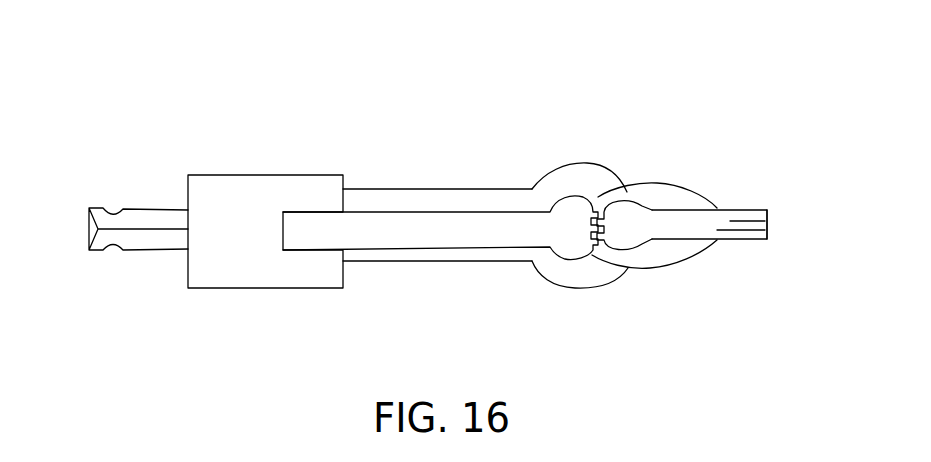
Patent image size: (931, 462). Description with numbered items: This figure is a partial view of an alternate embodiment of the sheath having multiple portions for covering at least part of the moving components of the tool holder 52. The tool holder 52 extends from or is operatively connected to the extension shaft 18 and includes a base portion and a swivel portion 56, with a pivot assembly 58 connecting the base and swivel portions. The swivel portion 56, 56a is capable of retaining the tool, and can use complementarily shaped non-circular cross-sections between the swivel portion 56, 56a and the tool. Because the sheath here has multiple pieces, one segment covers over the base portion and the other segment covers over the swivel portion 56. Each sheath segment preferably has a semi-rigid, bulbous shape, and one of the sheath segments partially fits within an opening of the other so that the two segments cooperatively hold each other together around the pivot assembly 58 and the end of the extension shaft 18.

The extension shaft 18 is at (413, 239).
The tool holder 52 is at (559, 185).
The swivel portion 56 is at (750, 243).
The swivel portion 56a is at (780, 218).
The pivot assembly 58 is at (587, 273).